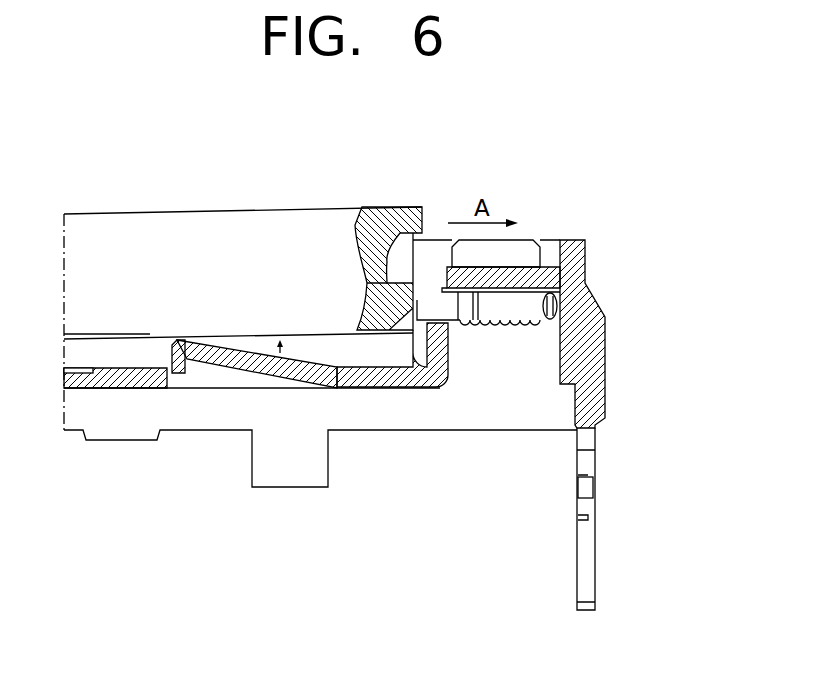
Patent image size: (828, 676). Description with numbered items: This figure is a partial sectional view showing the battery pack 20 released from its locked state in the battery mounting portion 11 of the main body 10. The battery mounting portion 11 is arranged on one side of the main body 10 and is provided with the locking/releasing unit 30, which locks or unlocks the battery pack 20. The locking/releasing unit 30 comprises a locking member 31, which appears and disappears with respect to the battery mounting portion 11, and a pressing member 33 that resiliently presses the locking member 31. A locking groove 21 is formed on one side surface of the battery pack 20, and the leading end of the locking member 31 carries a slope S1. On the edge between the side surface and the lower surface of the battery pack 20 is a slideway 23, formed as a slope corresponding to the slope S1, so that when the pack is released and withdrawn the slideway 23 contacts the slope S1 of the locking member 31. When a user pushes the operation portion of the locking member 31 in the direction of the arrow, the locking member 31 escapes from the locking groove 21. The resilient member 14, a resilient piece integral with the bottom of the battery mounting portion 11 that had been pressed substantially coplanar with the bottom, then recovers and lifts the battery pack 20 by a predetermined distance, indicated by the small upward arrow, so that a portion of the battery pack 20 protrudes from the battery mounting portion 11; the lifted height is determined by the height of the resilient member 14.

The main body 10 is at (621, 404).
The battery mounting portion 11 is at (127, 353).
The resilient member 14 is at (186, 372).
The battery pack 20 is at (298, 193).
The locking groove 21 is at (393, 263).
The slideway 23 is at (420, 388).
The locking/releasing unit 30 is at (544, 218).
The locking member 31 is at (512, 263).
The pressing member 33 is at (537, 322).
The slope S1 is at (426, 322).